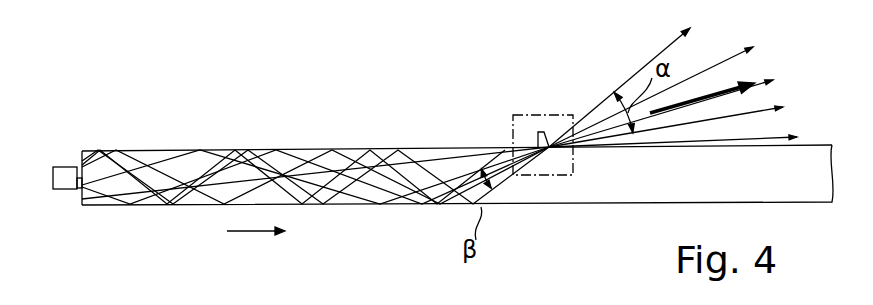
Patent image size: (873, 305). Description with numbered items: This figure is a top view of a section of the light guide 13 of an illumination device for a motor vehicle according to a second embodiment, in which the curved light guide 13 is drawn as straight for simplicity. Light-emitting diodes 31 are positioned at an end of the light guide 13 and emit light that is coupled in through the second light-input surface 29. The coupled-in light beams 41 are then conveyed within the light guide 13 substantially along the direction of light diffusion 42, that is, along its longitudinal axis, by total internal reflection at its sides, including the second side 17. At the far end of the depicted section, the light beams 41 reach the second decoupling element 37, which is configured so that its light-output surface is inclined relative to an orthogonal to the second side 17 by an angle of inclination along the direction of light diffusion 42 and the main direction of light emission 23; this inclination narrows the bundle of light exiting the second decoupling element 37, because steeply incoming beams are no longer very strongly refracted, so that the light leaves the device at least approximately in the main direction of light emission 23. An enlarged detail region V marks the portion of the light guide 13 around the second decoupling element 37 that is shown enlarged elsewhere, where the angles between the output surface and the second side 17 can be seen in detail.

The light guide 13 is at (138, 170).
The second side 17 is at (217, 150).
The second light-input surface 29 is at (80, 204).
The light-emitting diodes 31 is at (68, 173).
The second decoupling element 37 is at (546, 134).
The main direction of light emission 23 is at (722, 92).
The light beams 41 is at (758, 50).
The direction of light diffusion 42 is at (247, 233).
The enlarged detail region V is at (518, 110).